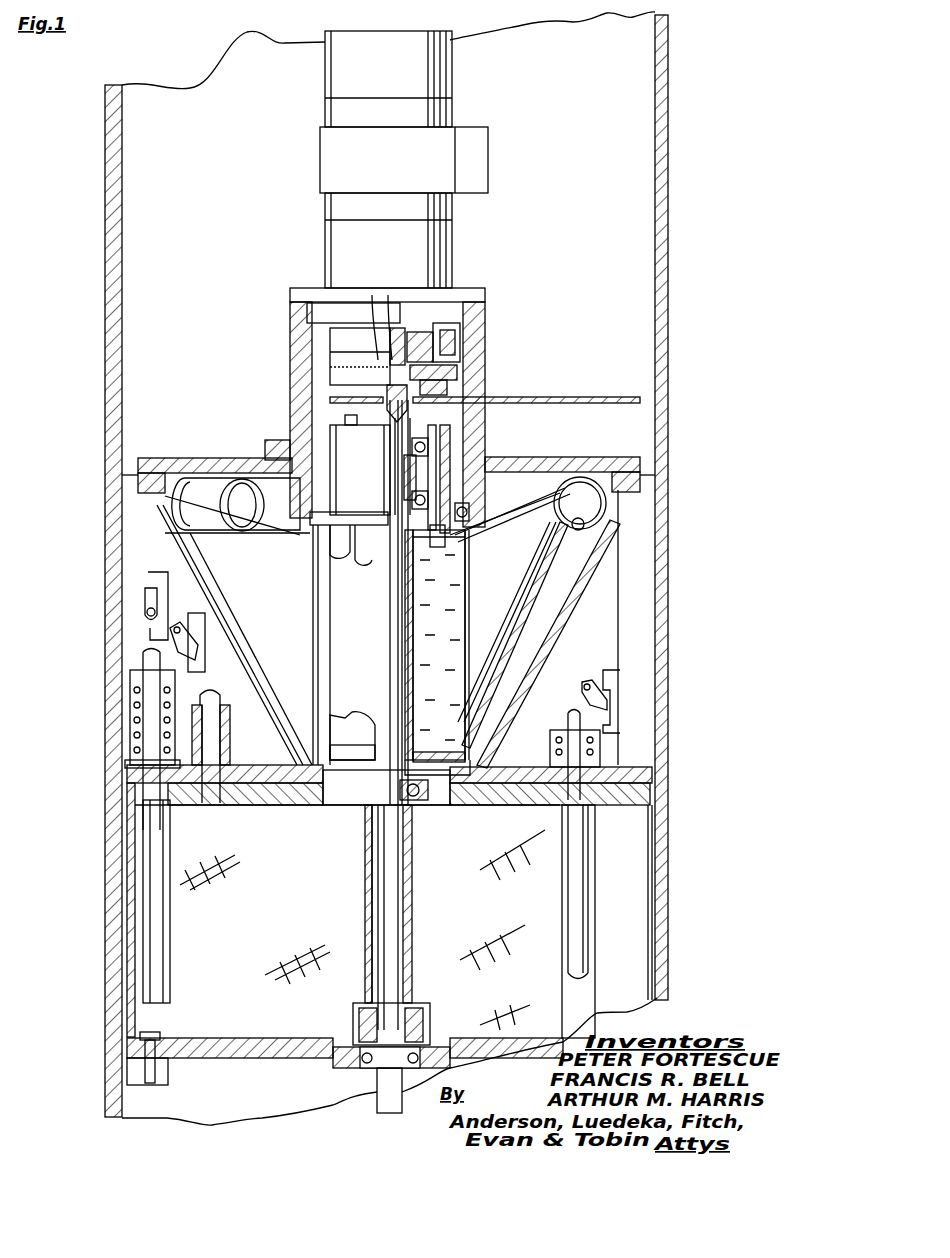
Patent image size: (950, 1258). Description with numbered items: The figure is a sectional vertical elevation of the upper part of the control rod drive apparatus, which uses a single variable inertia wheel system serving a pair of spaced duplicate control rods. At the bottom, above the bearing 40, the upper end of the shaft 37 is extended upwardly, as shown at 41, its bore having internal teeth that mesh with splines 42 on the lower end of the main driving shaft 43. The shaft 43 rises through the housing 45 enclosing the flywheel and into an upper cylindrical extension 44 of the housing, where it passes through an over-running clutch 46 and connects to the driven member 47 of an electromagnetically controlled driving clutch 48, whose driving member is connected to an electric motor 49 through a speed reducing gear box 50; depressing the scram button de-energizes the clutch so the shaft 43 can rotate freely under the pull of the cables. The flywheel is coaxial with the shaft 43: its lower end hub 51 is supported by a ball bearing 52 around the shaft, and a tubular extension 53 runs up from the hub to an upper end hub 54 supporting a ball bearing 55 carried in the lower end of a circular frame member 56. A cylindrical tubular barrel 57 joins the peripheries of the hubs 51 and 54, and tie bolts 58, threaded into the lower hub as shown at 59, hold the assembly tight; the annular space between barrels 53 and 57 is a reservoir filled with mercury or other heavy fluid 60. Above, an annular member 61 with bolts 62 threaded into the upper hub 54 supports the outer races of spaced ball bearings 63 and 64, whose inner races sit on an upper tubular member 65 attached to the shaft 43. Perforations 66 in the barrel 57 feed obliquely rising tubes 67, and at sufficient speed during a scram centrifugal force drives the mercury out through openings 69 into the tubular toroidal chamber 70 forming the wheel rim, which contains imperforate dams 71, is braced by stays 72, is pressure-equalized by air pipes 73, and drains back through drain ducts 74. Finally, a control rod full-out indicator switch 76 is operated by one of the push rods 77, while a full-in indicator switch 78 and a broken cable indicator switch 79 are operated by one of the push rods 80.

The shaft 37 is at (385, 1108).
The bearing 40 is at (363, 1068).
The extended upper end of the shaft 41 is at (402, 942).
The splines 42 is at (366, 826).
The main driving shaft 43 is at (392, 606).
The upper cylindrical extension 44 is at (487, 346).
The housing 45 is at (146, 485).
The over-running clutch 46 is at (322, 428).
The driven member 47 is at (380, 385).
The electro-magnetically controlled driving clutch 48 is at (332, 345).
The electric motor 49 is at (455, 70).
The speed reducing gear box 50 is at (455, 232).
The lower end hub 51 is at (460, 740).
The ball bearing 52 is at (425, 795).
The tubular extension 53 is at (413, 642).
The upper end hub 54 is at (432, 548).
The ball bearing 55 is at (462, 512).
The circular frame member 56 is at (505, 462).
The cylindrical tubular barrel 57 is at (447, 620).
The tie bolts 58 is at (332, 566).
The threaded lower end of tie bolt 59 is at (348, 730).
The heavy fluid 60 is at (450, 668).
The annular member 61 is at (435, 445).
The bolts 62 is at (452, 458).
The ball bearing 63 is at (412, 497).
The ball bearing 64 is at (410, 440).
The upper tubular member 65 is at (404, 470).
The perforation 66 is at (467, 720).
The tubes or conduits 67 is at (493, 673).
The openings 69 is at (584, 524).
The tubular toroidal chamber 70 is at (262, 524).
The baffles or dams 71 is at (240, 492).
The stays 72 is at (300, 540).
The air pipes 73 is at (535, 490).
The drain ducts or by-passes 74 is at (583, 550).
The control rod full-out indicator switch 76 is at (626, 712).
The push rods 77 is at (576, 908).
The full-in indicator switch 78 is at (138, 604).
The broken cable indicator switch 79 is at (108, 750).
The push rods 80 is at (158, 942).